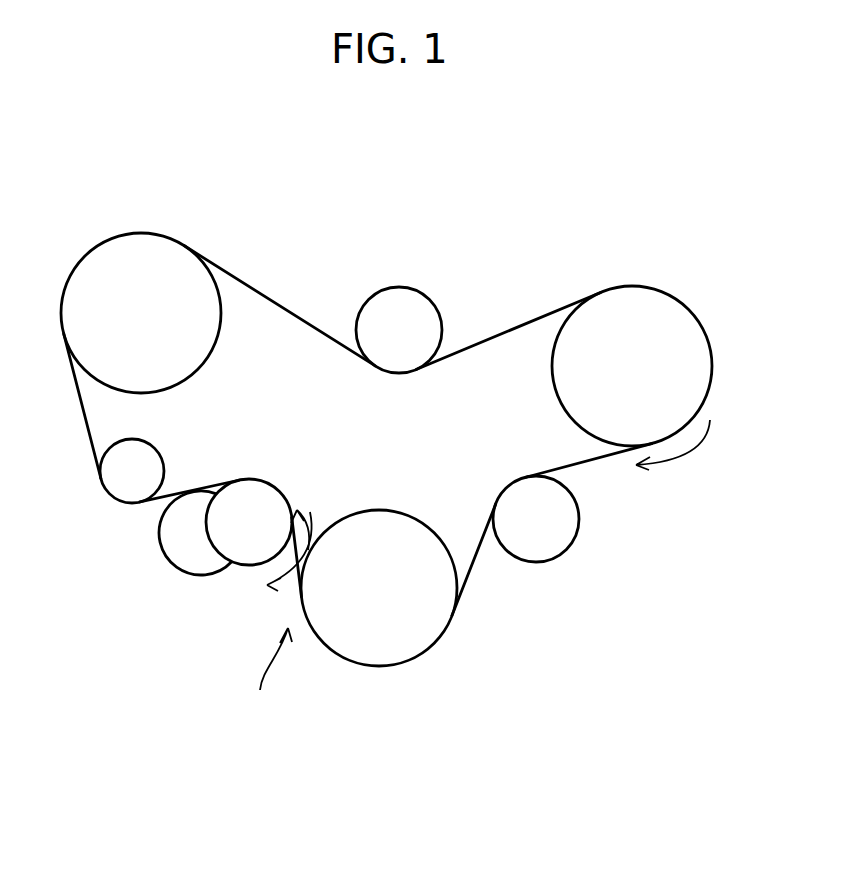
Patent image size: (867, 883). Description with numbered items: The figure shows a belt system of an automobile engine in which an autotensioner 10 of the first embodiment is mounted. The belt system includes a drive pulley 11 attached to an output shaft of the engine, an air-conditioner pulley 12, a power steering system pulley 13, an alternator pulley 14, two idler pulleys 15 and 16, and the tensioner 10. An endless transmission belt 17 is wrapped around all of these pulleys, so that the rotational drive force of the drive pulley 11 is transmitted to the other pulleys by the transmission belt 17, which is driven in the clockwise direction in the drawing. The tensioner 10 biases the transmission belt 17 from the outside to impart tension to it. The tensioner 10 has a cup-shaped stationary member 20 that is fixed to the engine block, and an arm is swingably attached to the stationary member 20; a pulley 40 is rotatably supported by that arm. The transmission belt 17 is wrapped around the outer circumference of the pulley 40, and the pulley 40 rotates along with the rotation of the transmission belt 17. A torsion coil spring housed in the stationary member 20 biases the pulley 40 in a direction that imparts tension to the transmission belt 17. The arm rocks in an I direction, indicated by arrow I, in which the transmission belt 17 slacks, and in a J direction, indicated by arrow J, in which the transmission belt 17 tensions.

The autotensioner 10 is at (279, 722).
The drive pulley 11 is at (405, 625).
The air-conditioner pulley 12 is at (670, 337).
The power steering system pulley 13 is at (115, 272).
The alternator pulley 14 is at (122, 473).
The idler pulley 15 is at (553, 516).
The idler pulley 16 is at (398, 316).
The transmission belt 17 is at (283, 308).
The stationary member 20 is at (182, 538).
The pulley 40 is at (247, 550).
The I direction I is at (300, 514).
The J direction J is at (277, 561).